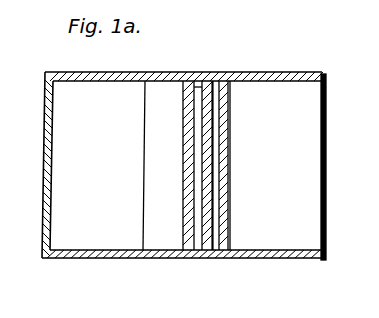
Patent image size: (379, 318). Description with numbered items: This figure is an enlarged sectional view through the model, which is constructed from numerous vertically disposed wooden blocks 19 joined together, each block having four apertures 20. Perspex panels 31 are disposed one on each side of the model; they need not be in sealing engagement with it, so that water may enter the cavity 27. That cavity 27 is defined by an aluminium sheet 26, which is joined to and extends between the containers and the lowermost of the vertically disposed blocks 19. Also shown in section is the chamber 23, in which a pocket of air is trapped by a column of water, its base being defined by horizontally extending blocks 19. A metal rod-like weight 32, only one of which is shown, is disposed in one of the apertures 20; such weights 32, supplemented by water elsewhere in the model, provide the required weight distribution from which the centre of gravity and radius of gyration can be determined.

The wooden block 19 is at (214, 137).
The aperture 20 is at (231, 117).
The chamber 23 is at (282, 171).
The aluminium sheet 26 is at (45, 144).
The cavity 27 is at (108, 170).
The perspex panel 31 is at (152, 74).
The metal rod-like weight 32 is at (199, 231).